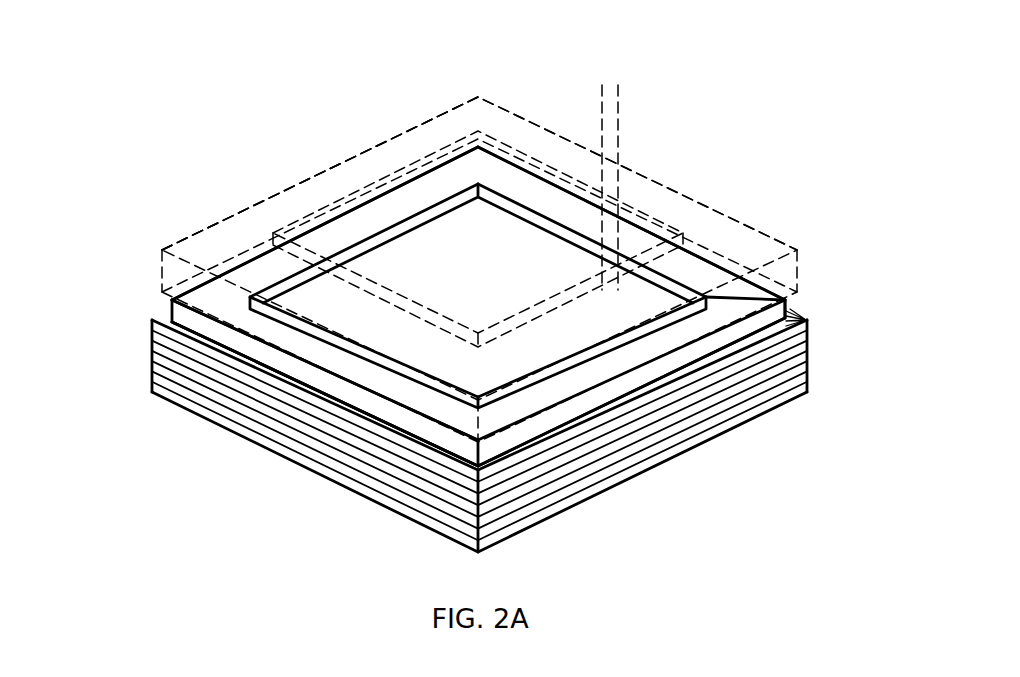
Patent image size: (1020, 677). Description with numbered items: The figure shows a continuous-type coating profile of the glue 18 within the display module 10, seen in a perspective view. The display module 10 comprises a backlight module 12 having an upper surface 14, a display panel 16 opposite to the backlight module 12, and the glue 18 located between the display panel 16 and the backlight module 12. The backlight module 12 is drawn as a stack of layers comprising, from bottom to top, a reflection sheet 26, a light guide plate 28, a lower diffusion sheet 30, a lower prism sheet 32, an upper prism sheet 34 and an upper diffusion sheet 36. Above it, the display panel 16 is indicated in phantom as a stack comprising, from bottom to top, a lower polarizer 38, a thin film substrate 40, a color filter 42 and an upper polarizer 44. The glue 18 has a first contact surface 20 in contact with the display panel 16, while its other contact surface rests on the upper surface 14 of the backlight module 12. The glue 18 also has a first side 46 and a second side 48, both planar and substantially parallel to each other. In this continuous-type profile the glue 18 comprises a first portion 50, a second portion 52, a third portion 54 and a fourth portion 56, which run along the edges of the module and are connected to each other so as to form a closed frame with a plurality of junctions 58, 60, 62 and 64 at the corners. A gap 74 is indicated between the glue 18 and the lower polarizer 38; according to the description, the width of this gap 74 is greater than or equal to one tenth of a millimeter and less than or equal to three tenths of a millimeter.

The display module 10 is at (83, 61).
The backlight module 12 is at (905, 452).
The upper surface 14 is at (788, 312).
The display panel 16 is at (62, 196).
The glue 18 is at (387, 413).
The first contact surface 20 is at (697, 282).
The reflection sheet 26 is at (587, 432).
The light guide plate 28 is at (630, 423).
The lower diffusion sheet 30 is at (673, 413).
The lower prism sheet 32 is at (713, 402).
The upper prism sheet 34 is at (767, 410).
The upper diffusion sheet 36 is at (795, 390).
The lower polarizer 38 is at (307, 285).
The thin film substrate 40 is at (160, 285).
The color filter 42 is at (237, 212).
The upper polarizer 44 is at (290, 188).
The first side 46 is at (287, 358).
The second side 48 is at (530, 209).
The first portion 50 is at (373, 197).
The second portion 52 is at (638, 220).
The third portion 54 is at (540, 432).
The fourth portion 56 is at (335, 392).
The junction 58 is at (168, 303).
The junction 60 is at (488, 173).
The junction 62 is at (740, 290).
The junction 64 is at (470, 430).
The gap 74 is at (576, 104).